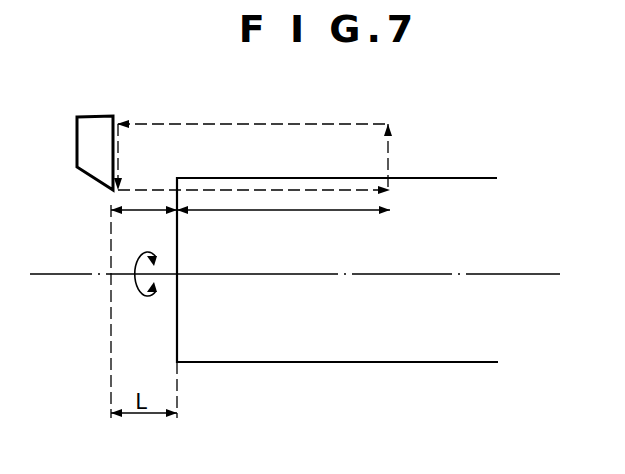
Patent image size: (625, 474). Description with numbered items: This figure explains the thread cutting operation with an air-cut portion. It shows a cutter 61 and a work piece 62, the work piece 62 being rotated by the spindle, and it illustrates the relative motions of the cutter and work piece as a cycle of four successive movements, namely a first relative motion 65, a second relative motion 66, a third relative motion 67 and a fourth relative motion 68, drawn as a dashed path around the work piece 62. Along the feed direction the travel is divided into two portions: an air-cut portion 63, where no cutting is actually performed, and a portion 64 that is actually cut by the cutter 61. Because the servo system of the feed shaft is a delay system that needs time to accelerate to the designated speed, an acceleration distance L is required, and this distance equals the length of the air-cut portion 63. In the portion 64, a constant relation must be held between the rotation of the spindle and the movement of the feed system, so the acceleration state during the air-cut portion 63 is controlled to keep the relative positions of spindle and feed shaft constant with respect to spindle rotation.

The cutter 61 is at (93, 130).
The work piece 62 is at (460, 178).
The air-cut portion 63 is at (146, 212).
The portion actually cut 64 is at (296, 212).
The relative motion (first) 65 is at (152, 190).
The relative motion (second) 66 is at (391, 150).
The relative motion (third) 67 is at (324, 124).
The relative motion (fourth) 68 is at (118, 168).